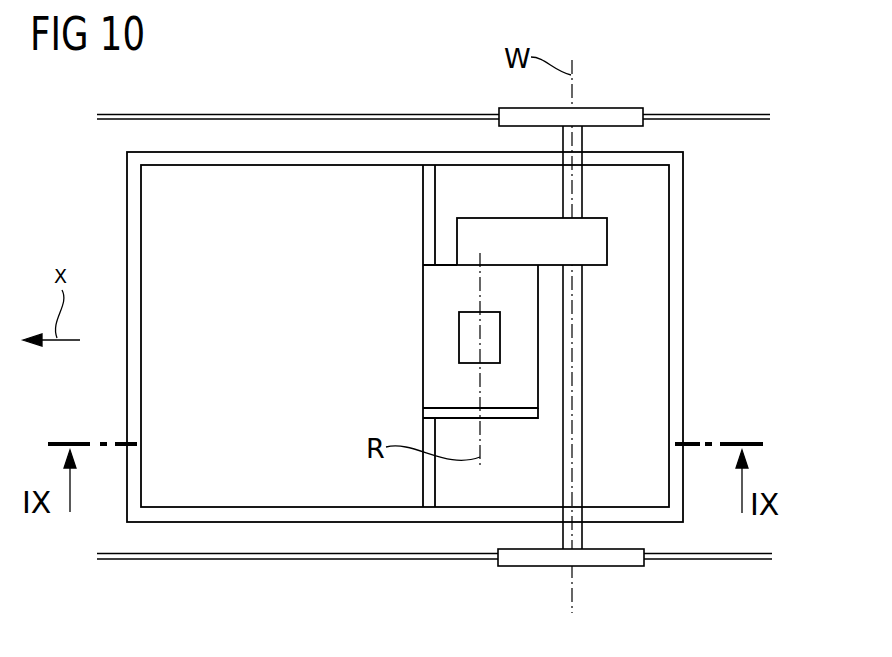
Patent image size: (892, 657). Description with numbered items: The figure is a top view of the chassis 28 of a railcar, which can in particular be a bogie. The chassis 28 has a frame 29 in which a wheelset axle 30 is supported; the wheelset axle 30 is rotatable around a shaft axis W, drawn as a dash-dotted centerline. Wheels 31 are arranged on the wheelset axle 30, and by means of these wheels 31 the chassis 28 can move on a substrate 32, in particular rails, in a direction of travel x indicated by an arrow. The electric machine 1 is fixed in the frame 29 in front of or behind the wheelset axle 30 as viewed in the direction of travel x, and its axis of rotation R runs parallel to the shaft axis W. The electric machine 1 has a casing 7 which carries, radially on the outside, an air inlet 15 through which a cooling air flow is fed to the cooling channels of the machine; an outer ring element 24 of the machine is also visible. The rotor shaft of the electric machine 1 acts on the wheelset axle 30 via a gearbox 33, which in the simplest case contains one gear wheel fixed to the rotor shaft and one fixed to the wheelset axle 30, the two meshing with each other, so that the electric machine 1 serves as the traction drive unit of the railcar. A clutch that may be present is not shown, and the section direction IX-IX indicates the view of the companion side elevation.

The electric machine 1 is at (407, 375).
The casing 7 is at (433, 292).
The air inlet 15 is at (468, 337).
The outer ring element 24 is at (513, 413).
The chassis 28 is at (488, 337).
The frame 29 is at (441, 337).
The wheelset axle 30 is at (577, 318).
The wheels 31 is at (605, 108).
The substrate 32 is at (326, 113).
The gearbox 33 is at (592, 245).